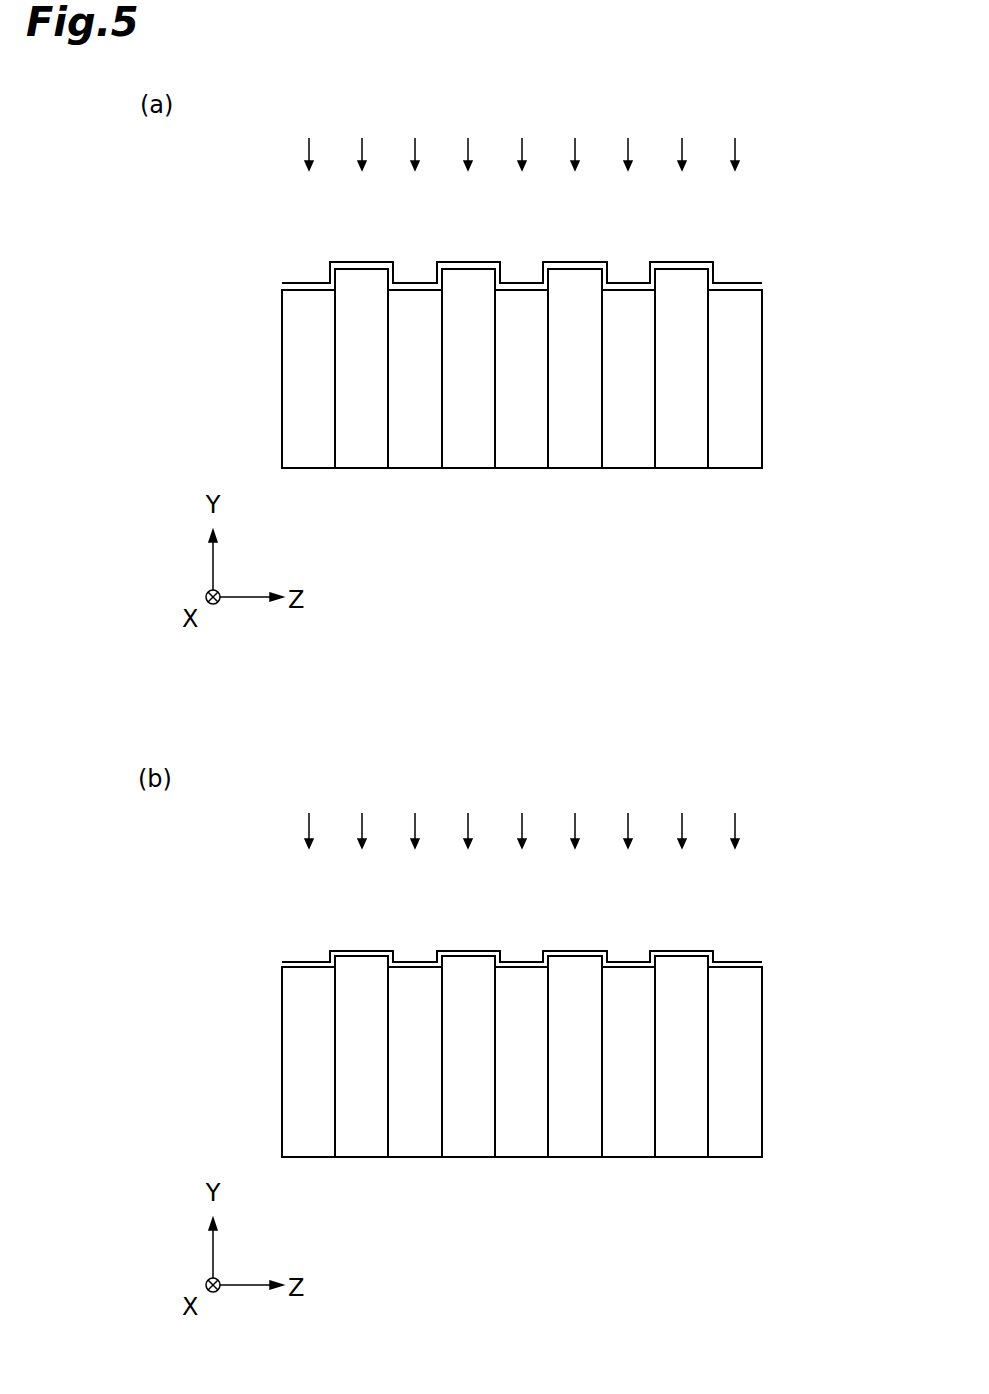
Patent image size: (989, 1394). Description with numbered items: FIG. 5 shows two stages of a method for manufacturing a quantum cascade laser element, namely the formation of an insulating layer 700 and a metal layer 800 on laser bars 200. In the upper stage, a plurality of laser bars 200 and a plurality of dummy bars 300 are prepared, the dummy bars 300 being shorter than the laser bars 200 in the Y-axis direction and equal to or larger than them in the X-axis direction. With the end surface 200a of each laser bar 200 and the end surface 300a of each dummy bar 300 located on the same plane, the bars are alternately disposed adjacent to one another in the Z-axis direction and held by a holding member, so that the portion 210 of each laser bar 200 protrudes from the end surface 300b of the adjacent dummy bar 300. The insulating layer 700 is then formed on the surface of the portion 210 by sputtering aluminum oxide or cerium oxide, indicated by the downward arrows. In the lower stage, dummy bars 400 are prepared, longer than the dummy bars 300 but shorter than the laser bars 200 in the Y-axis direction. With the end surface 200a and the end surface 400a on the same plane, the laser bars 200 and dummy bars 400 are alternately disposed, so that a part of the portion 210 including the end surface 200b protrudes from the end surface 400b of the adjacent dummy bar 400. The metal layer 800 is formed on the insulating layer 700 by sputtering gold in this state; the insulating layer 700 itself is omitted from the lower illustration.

The laser bar 200 is at (690, 343).
The end surface of the laser bar 200a is at (682, 456).
The end surface of the laser bar 200b is at (688, 280).
The portion of the laser bar 210 is at (700, 270).
The dummy bar 300 is at (625, 395).
The end surface of the dummy bar 300a is at (628, 470).
The end surface of the dummy bar 300b is at (627, 283).
The dummy bar 400 is at (625, 1085).
The end surface of the dummy bar 400a is at (628, 1159).
The end surface of the dummy bar 400b is at (627, 962).
The insulating layer 700 is at (362, 262).
The metal layer 800 is at (362, 951).